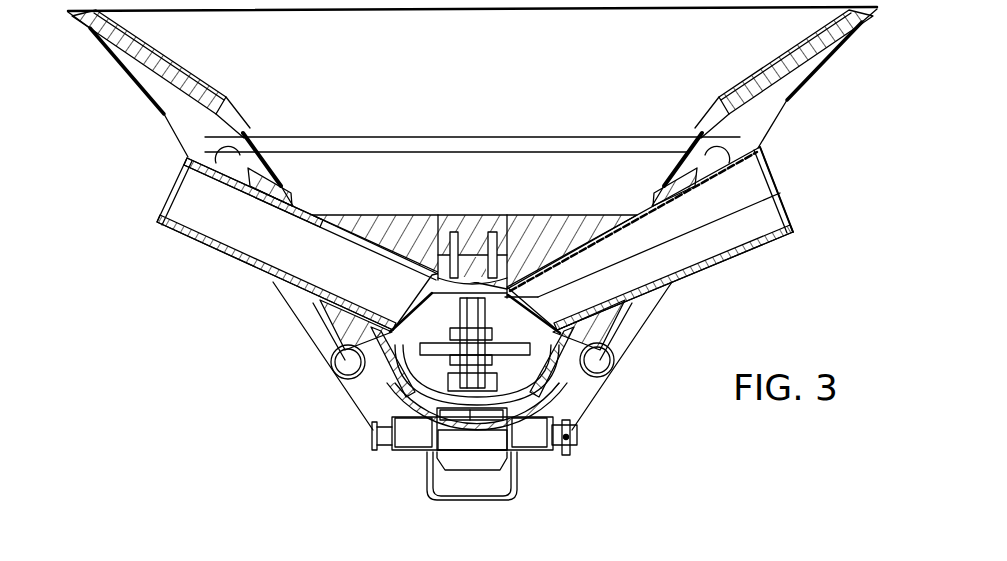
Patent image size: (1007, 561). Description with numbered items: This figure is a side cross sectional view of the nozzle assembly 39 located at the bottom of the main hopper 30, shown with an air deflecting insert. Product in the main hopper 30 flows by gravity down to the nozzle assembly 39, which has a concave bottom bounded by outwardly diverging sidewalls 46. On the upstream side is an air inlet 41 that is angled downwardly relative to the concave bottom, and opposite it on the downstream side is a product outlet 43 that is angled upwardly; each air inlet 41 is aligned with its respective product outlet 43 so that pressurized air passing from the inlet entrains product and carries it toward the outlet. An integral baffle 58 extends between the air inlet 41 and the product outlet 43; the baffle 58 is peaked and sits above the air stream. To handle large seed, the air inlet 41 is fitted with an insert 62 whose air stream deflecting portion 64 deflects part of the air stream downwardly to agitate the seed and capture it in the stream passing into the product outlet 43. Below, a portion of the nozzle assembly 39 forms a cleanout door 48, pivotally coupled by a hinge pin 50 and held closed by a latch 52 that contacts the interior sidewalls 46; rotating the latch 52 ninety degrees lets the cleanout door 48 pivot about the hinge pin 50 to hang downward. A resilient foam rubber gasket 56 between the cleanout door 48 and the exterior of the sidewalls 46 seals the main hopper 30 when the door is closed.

The main hopper 30 is at (502, 83).
The nozzle assembly 39 is at (238, 381).
The air inlet 41 is at (733, 232).
The product outlet 43 is at (218, 234).
The outwardly diverging sidewalls 46 is at (238, 142).
The cleanout door 48 is at (427, 427).
The hinge pin 50 is at (383, 450).
The latch 52 is at (480, 478).
The resilient foam rubber gasket 56 is at (367, 402).
The integral baffle 58 is at (465, 223).
The insert 62 is at (788, 195).
The air stream deflecting portion 64 is at (567, 258).